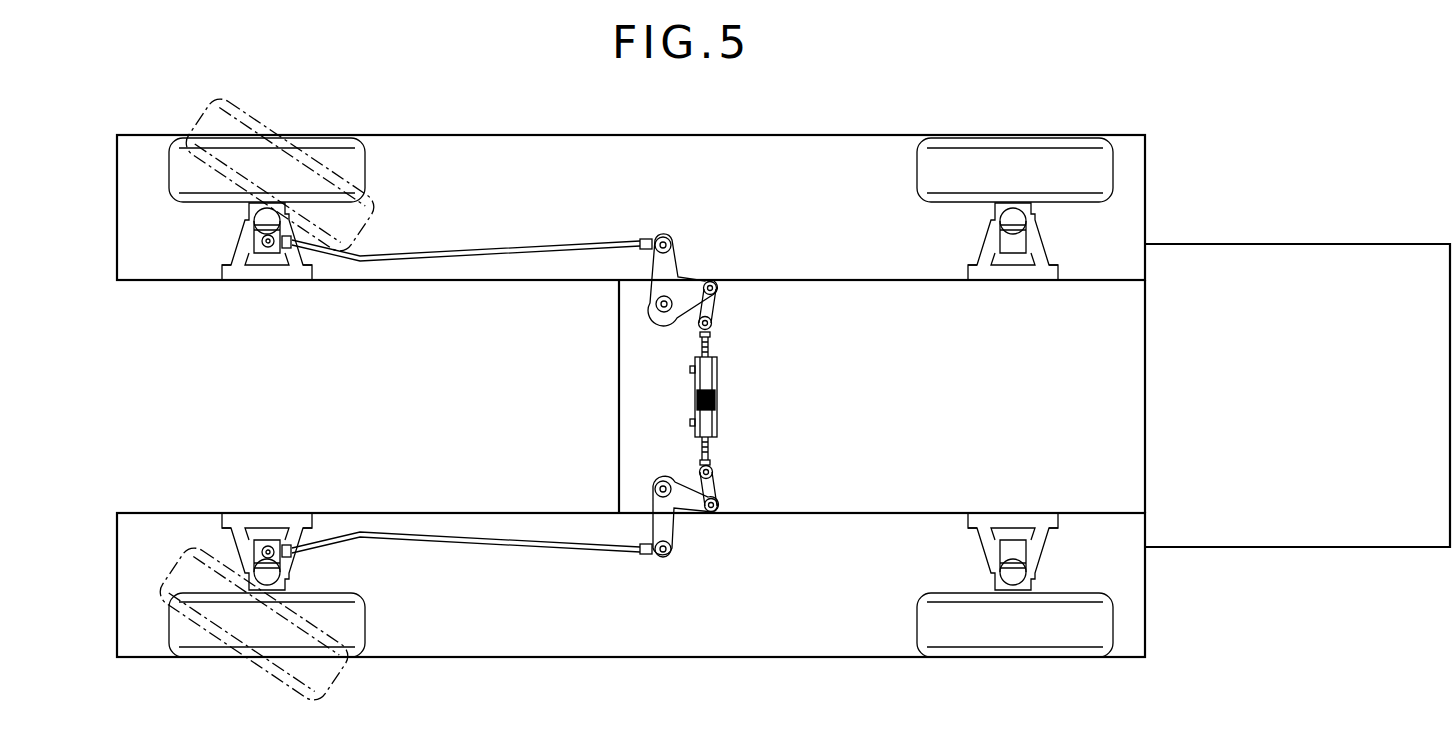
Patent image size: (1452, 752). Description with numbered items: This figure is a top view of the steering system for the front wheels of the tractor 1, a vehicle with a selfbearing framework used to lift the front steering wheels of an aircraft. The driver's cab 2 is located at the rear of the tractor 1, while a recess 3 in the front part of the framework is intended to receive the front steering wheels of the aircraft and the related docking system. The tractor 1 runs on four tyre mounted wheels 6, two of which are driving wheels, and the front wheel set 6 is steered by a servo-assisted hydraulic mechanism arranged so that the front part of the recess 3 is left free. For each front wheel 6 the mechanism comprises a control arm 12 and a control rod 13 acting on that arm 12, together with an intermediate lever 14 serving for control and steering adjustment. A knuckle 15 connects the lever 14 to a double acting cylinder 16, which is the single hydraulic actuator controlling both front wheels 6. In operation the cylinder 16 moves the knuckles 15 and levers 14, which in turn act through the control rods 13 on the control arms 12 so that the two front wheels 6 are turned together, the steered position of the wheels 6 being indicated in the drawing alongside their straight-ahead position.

The tractor 1 is at (743, 146).
The driver's cab 2 is at (1266, 272).
The recess 3 is at (357, 369).
The tyre mounted wheel 6 is at (341, 154).
The control arm 12 is at (267, 250).
The control rod 13 is at (430, 256).
The intermediate lever 14 is at (658, 290).
The knuckle 15 is at (716, 304).
The double acting cylinder 16 is at (695, 412).